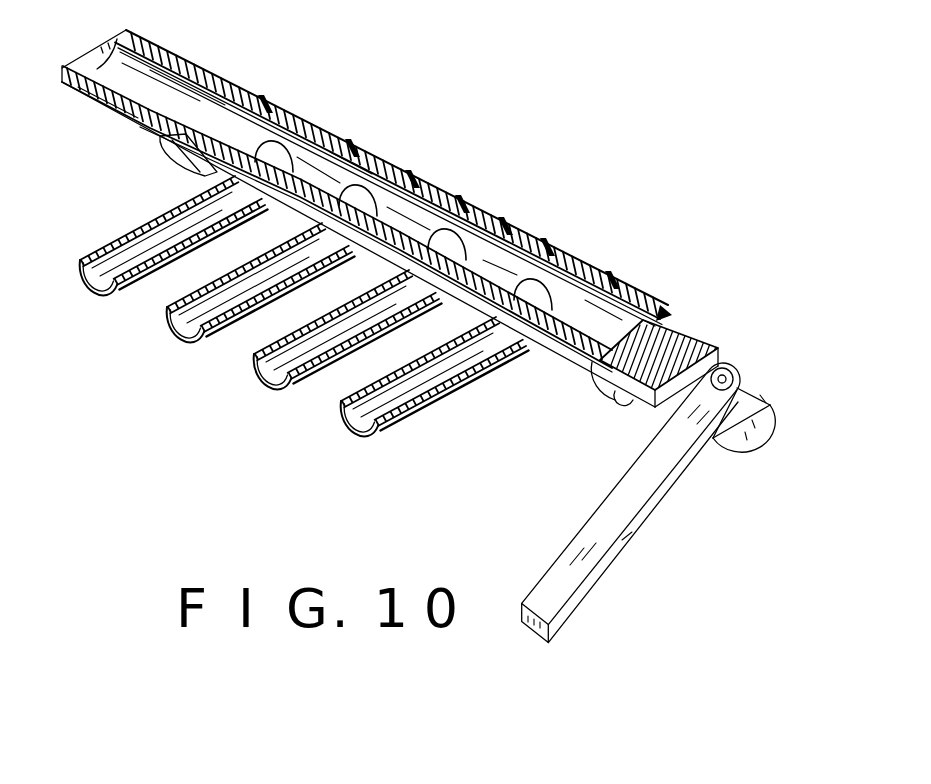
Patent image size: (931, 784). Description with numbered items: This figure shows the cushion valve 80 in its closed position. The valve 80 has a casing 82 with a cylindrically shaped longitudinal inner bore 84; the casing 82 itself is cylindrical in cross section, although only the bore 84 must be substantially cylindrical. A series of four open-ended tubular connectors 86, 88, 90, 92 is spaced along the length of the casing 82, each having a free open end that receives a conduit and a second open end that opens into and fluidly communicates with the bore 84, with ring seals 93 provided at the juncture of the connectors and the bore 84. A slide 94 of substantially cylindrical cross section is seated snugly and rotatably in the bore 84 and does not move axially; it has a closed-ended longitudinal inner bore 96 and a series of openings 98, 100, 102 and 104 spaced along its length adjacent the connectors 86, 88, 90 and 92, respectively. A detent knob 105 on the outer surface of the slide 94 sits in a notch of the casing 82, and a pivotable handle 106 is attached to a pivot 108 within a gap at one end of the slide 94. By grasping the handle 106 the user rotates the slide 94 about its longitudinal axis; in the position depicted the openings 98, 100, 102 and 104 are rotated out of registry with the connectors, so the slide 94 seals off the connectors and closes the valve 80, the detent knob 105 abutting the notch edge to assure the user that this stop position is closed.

The valve 80 is at (536, 222).
The casing 82 is at (263, 100).
The longitudinal inner bore 84 is at (633, 300).
The tubular connector 86 is at (147, 294).
The tubular connector 88 is at (233, 341).
The tubular connector 90 is at (312, 394).
The tubular connector 92 is at (423, 412).
The ring seal 93 is at (233, 168).
The slide 94 is at (361, 141).
The longitudinal inner bore 96 is at (454, 238).
The opening 98 is at (285, 148).
The opening 100 is at (422, 228).
The opening 102 is at (487, 237).
The opening 104 is at (560, 284).
The detent knob 105 is at (623, 406).
The handle 106 is at (650, 487).
The pivot 108 is at (727, 368).